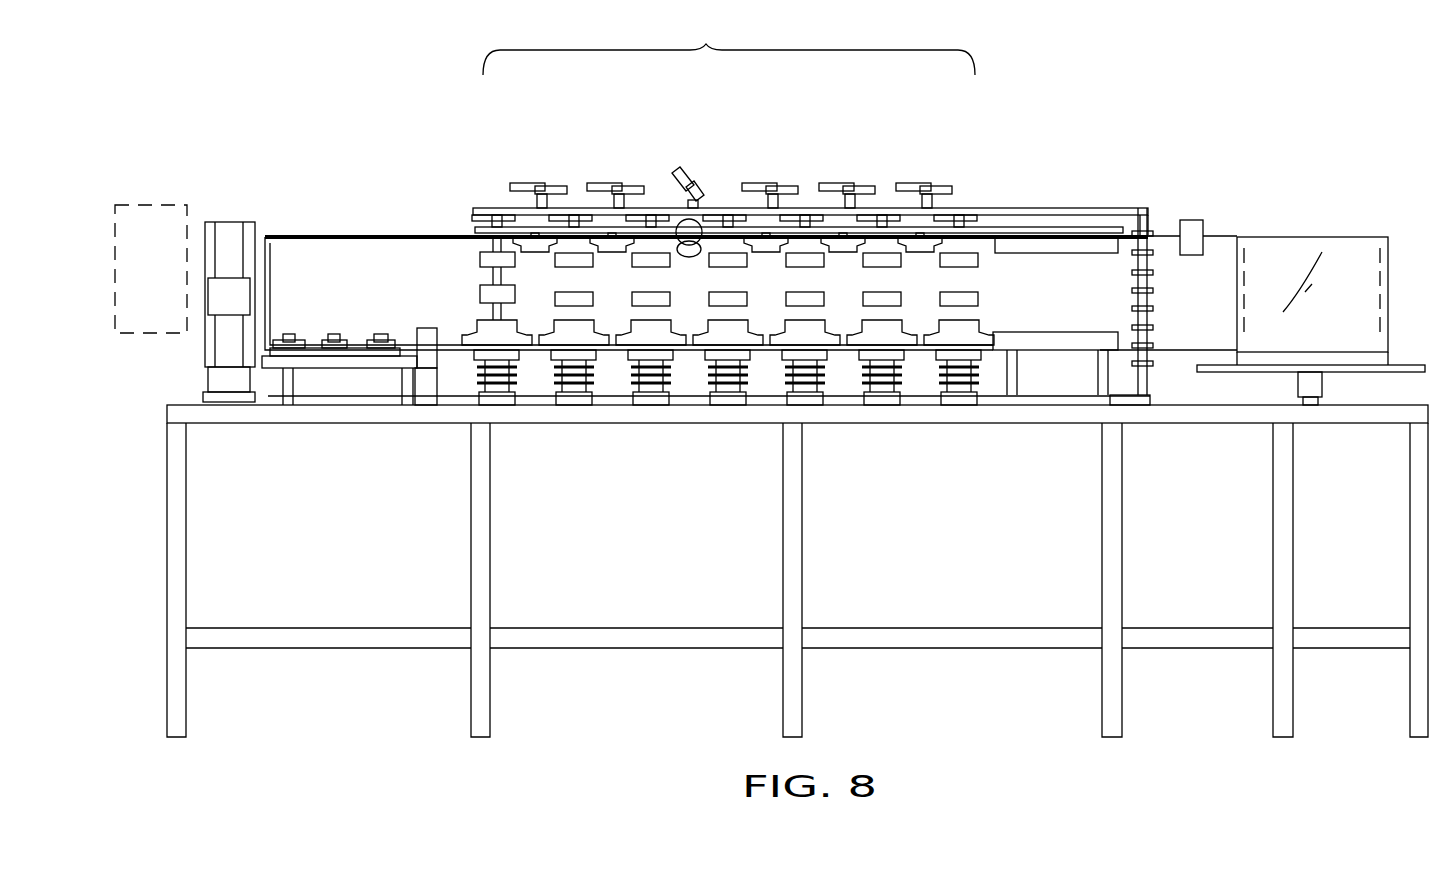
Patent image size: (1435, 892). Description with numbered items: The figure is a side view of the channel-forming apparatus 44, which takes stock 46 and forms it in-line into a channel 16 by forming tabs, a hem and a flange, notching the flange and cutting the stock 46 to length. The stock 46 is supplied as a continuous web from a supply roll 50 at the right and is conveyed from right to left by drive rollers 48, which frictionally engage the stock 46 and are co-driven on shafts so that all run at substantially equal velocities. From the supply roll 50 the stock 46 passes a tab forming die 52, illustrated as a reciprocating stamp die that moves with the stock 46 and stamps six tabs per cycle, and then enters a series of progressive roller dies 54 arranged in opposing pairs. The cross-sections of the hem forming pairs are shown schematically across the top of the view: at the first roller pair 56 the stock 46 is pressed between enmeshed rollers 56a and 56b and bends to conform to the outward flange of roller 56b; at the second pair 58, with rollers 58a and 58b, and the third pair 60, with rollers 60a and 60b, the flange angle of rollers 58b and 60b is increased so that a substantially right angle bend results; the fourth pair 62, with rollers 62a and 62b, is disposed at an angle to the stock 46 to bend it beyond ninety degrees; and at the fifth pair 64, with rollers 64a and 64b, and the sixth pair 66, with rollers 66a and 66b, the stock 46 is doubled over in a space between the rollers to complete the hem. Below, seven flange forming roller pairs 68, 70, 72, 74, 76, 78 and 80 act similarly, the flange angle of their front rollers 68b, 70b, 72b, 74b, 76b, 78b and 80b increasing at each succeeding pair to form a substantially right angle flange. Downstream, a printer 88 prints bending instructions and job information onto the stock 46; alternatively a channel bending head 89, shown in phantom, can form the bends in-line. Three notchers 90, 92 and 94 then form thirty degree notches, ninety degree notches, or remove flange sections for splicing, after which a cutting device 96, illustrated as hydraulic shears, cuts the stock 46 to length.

The apparatus 44 is at (1138, 175).
The stock 46 is at (1214, 313).
The drive rollers 48 is at (980, 262).
The supply roll 50 is at (1323, 245).
The die 52 is at (1197, 220).
The progressive roller dies 54 is at (718, 22).
The first roller pair 56 is at (913, 250).
The roller 56a is at (927, 186).
The roller 56b is at (912, 183).
The second roller pair 58 is at (835, 250).
The roller 58a is at (850, 186).
The roller 58b is at (840, 183).
The third roller pair 60 is at (760, 250).
The roller 60a is at (778, 186).
The roller 60b is at (765, 183).
The fourth hem forming roller pair 62 is at (678, 250).
The roller 62a is at (702, 187).
The roller 62b is at (684, 170).
The fifth hem forming roller pair 64 is at (627, 248).
The roller 64a is at (625, 186).
The roller 64b is at (603, 183).
The sixth hem forming roller pair 66 is at (550, 248).
The roller 66a is at (547, 186).
The roller 66b is at (532, 183).
The channel 16 is at (537, 205).
The roller pair 68 is at (999, 323).
The front roller 68b is at (1003, 352).
The roller pair 70 is at (918, 325).
The front roller 70b is at (853, 352).
The roller pair 72 is at (841, 325).
The front roller 72b is at (776, 352).
The roller pair 74 is at (771, 312).
The front roller 74b is at (699, 352).
The roller pair 76 is at (687, 325).
The front roller 76b is at (622, 352).
The roller pair 78 is at (610, 325).
The front roller 78b is at (545, 352).
The roller pair 80 is at (533, 325).
The front roller 80b is at (468, 352).
The printer 88 is at (427, 328).
The channel bending head 89 is at (188, 205).
The first notcher 90 is at (376, 334).
The second notcher 92 is at (333, 334).
The third notcher 94 is at (288, 334).
The cutting device 96 is at (238, 222).